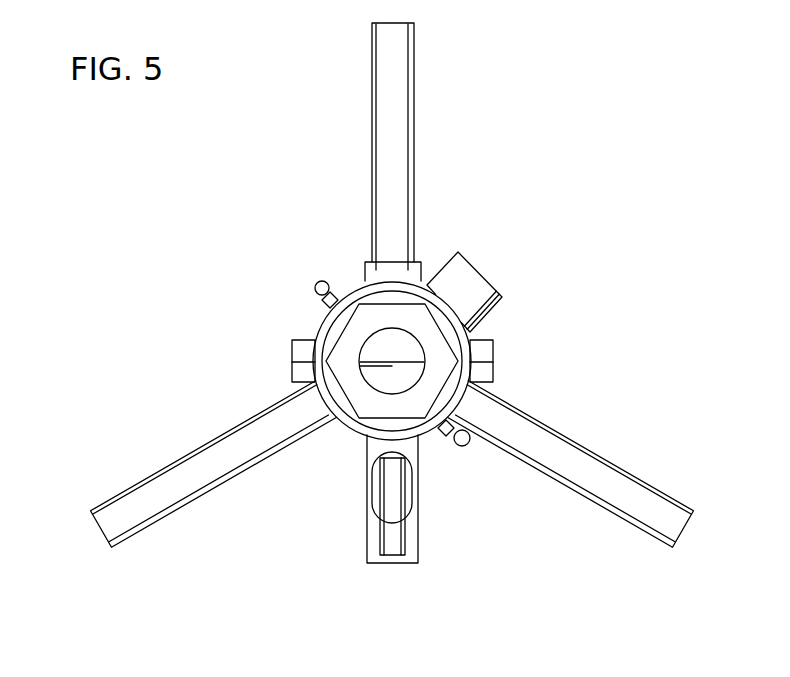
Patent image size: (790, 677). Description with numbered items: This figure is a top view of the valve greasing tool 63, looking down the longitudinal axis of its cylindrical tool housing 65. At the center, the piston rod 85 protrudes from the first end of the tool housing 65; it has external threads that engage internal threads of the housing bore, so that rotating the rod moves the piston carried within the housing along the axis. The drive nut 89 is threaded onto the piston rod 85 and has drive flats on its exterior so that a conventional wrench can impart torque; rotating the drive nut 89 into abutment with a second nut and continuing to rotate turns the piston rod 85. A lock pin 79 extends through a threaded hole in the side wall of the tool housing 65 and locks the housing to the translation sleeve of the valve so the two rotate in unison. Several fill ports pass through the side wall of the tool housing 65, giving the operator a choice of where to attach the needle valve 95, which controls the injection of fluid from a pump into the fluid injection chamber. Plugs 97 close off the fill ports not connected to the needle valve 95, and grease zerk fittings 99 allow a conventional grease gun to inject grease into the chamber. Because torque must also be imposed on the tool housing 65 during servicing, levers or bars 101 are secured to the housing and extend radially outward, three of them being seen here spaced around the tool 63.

The valve greasing tool 63 is at (409, 350).
The tool housing 65 is at (474, 334).
The lock pin 79 is at (458, 277).
The piston rod 85 is at (373, 360).
The drive nut 89 is at (392, 303).
The needle valve 95 is at (418, 492).
The plug 97 is at (292, 372).
The grease zerk fitting 99 is at (315, 287).
The lever 101 is at (158, 492).